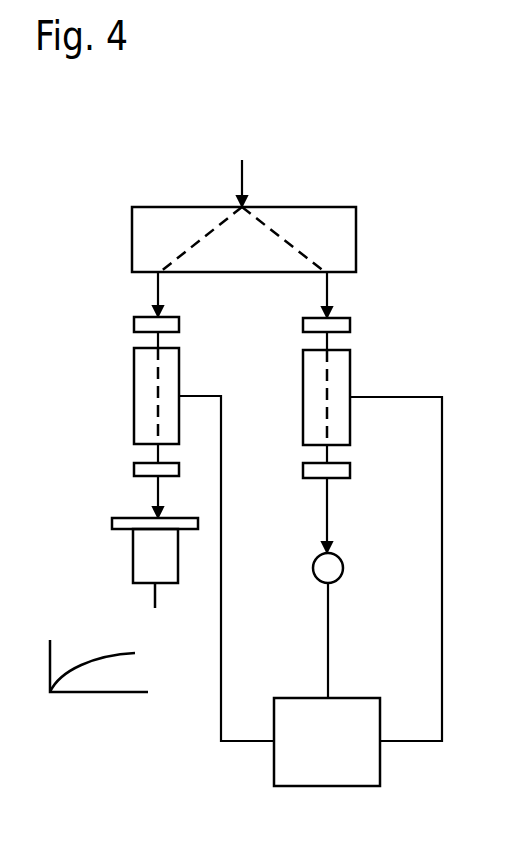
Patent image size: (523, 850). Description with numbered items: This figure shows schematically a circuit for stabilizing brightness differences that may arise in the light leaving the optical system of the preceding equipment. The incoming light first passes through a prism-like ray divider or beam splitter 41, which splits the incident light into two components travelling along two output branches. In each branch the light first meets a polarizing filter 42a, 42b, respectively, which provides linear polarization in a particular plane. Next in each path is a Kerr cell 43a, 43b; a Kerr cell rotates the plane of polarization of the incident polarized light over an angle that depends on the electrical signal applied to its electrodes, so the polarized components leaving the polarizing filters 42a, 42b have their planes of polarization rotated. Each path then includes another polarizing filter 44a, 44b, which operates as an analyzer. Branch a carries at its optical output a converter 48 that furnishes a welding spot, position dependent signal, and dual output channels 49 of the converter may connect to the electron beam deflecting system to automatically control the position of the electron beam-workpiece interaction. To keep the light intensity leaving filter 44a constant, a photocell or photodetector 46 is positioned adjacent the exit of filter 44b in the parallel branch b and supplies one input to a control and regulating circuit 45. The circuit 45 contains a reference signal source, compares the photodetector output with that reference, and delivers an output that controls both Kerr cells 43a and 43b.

The beam splitter 41 is at (331, 220).
The polarizing filter 42a is at (136, 325).
The polarizing filter 42b is at (350, 321).
The Kerr cell 43a is at (147, 378).
The Kerr cell 43b is at (340, 375).
The polarizing filter 44a is at (136, 470).
The polarizing filter 44b is at (342, 469).
The control and regulating circuit 45 is at (353, 709).
The photodetector 46 is at (330, 565).
The converter 48 is at (147, 553).
The dual output channels 49 is at (148, 604).